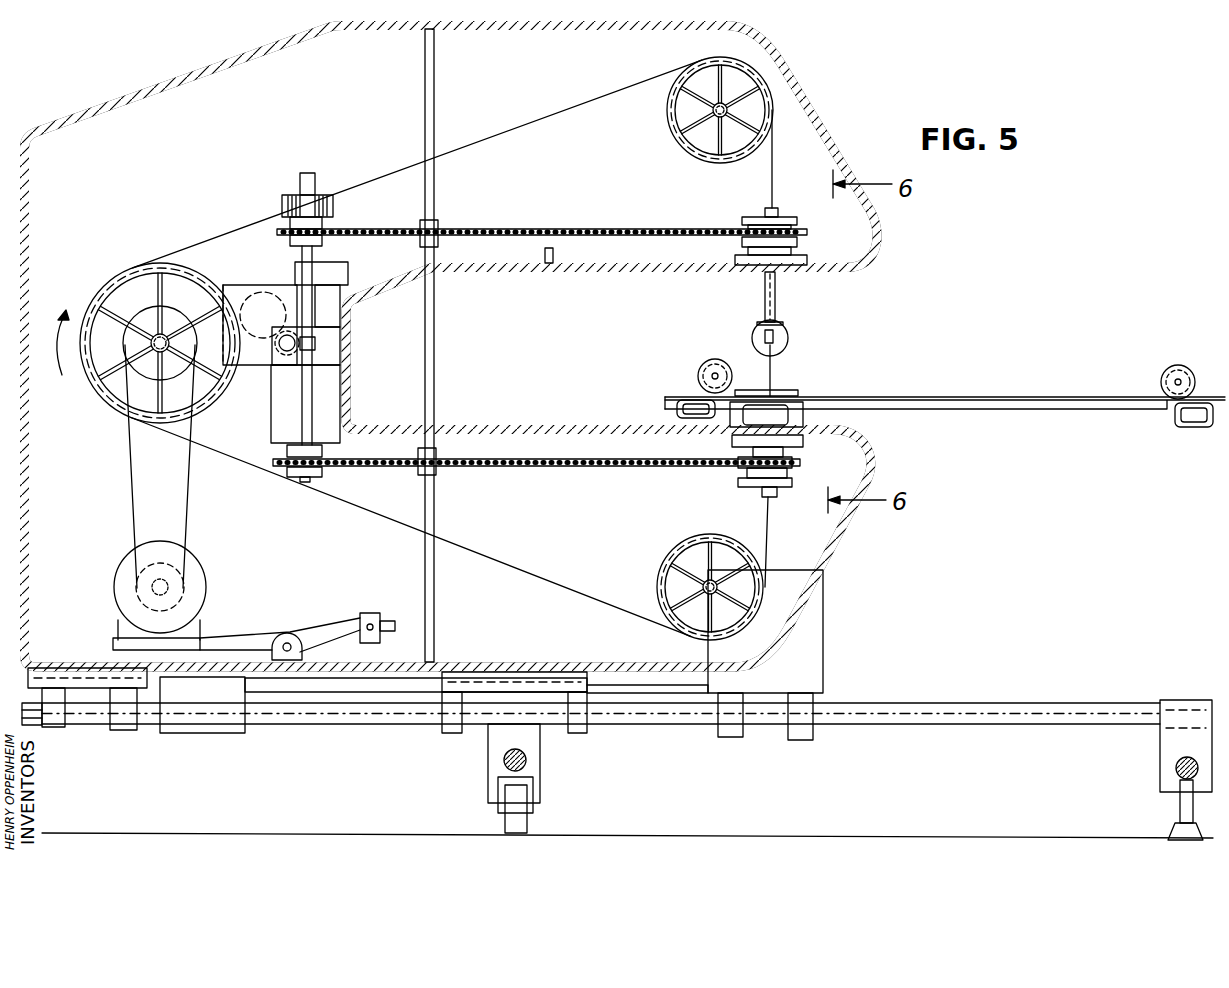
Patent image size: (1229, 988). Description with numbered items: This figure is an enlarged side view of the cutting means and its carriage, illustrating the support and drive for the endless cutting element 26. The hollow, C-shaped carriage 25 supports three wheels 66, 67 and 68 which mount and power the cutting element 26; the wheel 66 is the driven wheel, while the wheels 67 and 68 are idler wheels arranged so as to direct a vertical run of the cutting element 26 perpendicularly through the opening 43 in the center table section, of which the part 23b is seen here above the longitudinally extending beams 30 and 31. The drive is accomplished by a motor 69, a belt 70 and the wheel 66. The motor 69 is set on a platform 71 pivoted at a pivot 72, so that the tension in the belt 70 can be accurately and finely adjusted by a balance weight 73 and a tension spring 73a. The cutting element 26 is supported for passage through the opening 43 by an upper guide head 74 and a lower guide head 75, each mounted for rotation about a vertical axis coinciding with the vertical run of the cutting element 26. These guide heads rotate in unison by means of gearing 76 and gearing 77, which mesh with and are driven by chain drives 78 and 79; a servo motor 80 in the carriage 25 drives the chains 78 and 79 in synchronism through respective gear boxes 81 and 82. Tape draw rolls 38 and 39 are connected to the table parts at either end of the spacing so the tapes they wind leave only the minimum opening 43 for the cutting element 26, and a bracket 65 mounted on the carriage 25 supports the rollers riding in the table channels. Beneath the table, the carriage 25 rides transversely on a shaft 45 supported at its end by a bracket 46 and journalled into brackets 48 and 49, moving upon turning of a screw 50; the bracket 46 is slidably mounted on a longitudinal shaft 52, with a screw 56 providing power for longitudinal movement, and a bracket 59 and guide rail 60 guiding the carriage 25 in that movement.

The carriage 25 is at (872, 62).
The wheel 66 is at (128, 272).
The idler wheel 67 is at (722, 58).
The idler wheel 68 is at (666, 568).
The motor 69 is at (128, 560).
The belt 70 is at (132, 482).
The platform 71 is at (245, 632).
The pivot 72 is at (290, 642).
The balance weight 73 is at (367, 613).
The tension spring 73a is at (130, 652).
The upper guide head 74 is at (782, 338).
The cutting element 26 is at (774, 372).
The opening 43 is at (772, 397).
The table section part 23b is at (1018, 409).
The beam 30 is at (677, 409).
The beam 31 is at (1176, 420).
The tape draw roll 38 is at (702, 366).
The tape draw roll 39 is at (1162, 372).
The bracket 65 is at (804, 425).
The lower guide head 75 is at (748, 412).
The gearing 76 is at (800, 236).
The gearing 77 is at (742, 472).
The chain drive 78 is at (612, 208).
The chain drive 79 is at (604, 468).
The servo motor 80 is at (262, 292).
The gear box 81 is at (335, 265).
The gear box 82 is at (278, 415).
The shaft 45 is at (95, 716).
The bracket 46 is at (1182, 702).
The bracket 48 is at (132, 730).
The bracket 49 is at (733, 737).
The screw 50 is at (36, 718).
The shaft 52 is at (1176, 769).
The screw 56 is at (503, 760).
The bracket 59 is at (536, 760).
The guide rail 60 is at (520, 825).